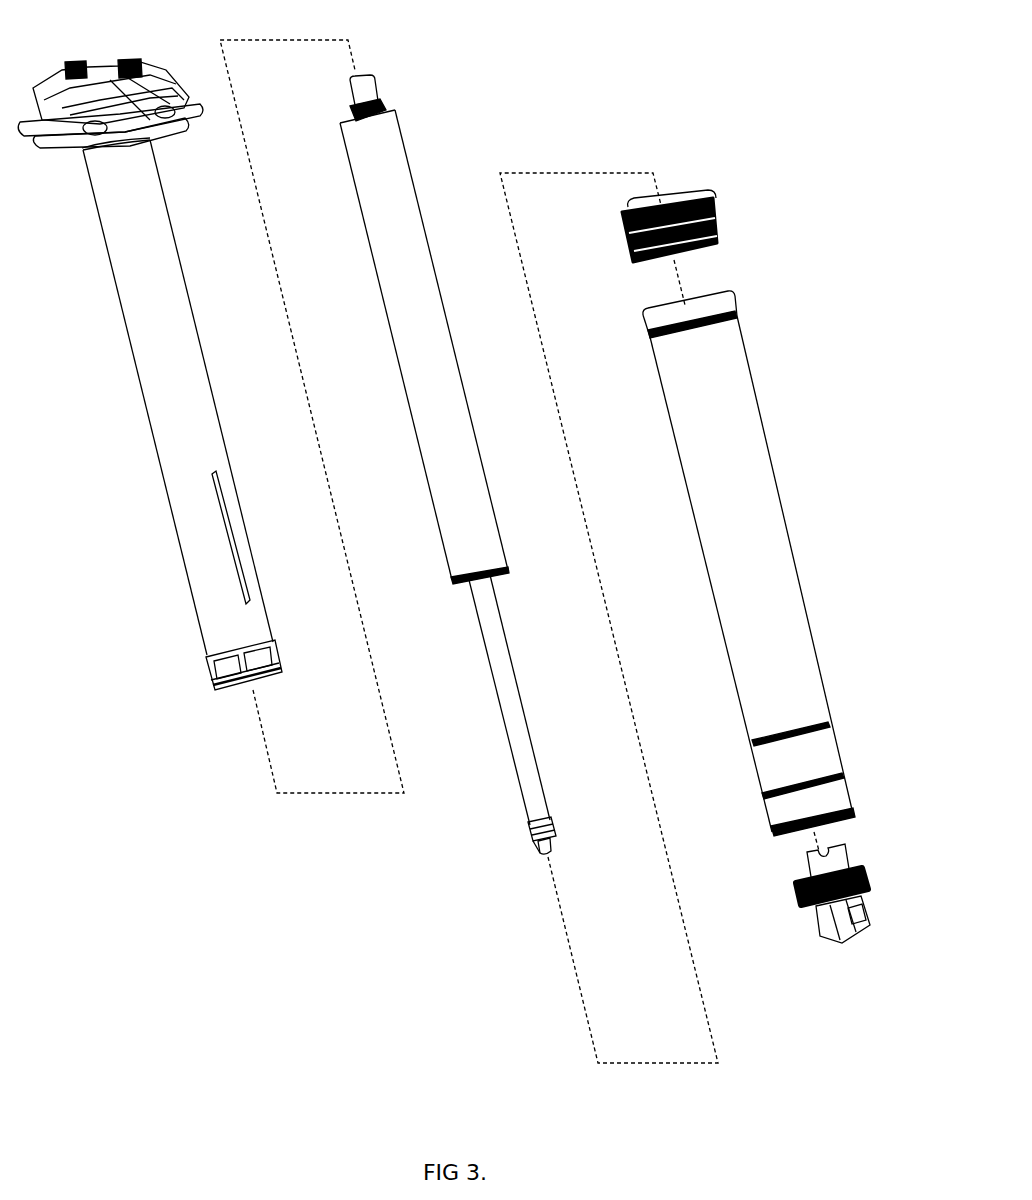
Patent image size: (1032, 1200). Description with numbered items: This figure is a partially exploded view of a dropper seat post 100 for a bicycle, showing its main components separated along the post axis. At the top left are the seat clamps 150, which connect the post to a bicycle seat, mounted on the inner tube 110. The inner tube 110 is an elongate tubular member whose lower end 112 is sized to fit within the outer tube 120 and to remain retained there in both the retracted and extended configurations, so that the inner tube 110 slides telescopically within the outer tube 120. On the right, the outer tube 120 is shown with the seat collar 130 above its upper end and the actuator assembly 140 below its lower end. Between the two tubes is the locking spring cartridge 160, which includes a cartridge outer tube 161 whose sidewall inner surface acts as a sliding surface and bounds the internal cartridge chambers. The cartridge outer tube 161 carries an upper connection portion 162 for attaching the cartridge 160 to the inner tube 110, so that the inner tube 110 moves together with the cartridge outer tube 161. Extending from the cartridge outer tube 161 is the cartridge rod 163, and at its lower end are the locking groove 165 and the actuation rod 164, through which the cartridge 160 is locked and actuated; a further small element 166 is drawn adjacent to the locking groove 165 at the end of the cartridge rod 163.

The dropper seat post 100 is at (695, 70).
The inner tube 110 is at (182, 444).
The lower end 112 is at (227, 692).
The outer tube 120 is at (760, 417).
The seat collar 130 is at (716, 204).
The actuator assembly 140 is at (867, 880).
The seat clamps 150 is at (152, 65).
The locking spring cartridge 160 is at (478, 468).
The cartridge outer tube 161 is at (410, 182).
The upper connection portion 162 is at (373, 90).
The cartridge rod 163 is at (520, 695).
The actuation rod 164 is at (552, 844).
The locking groove 165 is at (548, 823).
The collar flange 166 is at (535, 840).